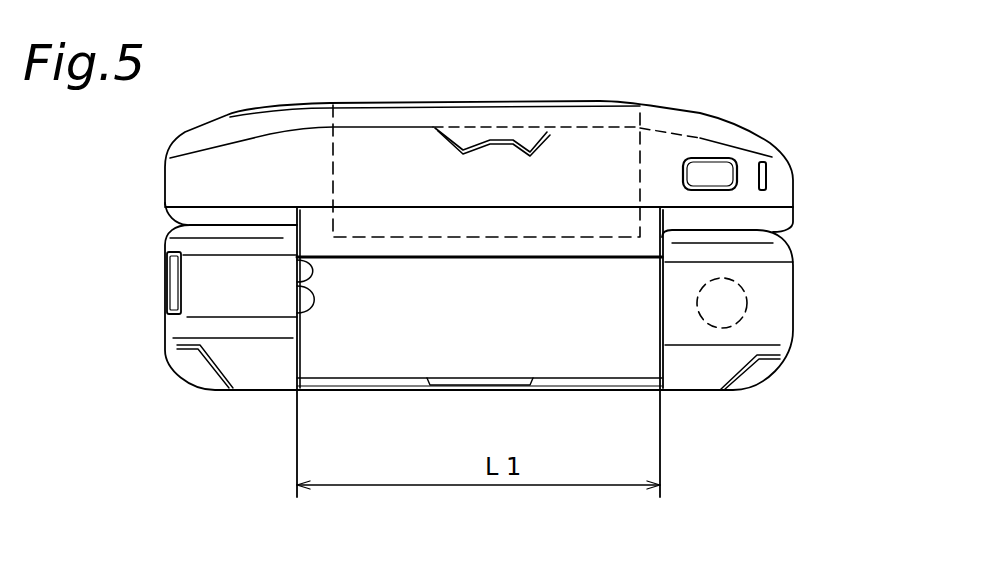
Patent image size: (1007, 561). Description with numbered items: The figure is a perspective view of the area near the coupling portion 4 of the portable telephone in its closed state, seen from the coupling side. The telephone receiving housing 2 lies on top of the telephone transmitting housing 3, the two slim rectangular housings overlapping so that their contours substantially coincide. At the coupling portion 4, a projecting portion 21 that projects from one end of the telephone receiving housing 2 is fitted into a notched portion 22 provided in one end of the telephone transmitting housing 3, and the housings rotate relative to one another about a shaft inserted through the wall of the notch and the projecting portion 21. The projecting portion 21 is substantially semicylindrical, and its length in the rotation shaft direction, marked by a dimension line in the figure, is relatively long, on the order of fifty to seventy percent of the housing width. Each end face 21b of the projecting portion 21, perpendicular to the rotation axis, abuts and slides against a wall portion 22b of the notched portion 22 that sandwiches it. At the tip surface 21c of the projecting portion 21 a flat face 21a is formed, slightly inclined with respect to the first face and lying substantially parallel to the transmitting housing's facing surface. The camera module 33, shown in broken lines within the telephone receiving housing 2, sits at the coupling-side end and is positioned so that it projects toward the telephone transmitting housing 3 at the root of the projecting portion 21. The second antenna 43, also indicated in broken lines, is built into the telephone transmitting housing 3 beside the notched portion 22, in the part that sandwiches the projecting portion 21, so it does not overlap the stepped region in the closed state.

The telephone receiving housing 2 is at (763, 151).
The telephone transmitting housing 3 is at (777, 315).
The coupling portion 4 is at (788, 374).
The camera module 33 is at (598, 158).
The second antenna 43 is at (746, 287).
The projecting portion 21 is at (333, 353).
The flat face 21a is at (340, 357).
The end face 21b is at (322, 343).
The tip surface 21c is at (620, 390).
The notched portion 22 is at (187, 317).
The wall portion 22b is at (297, 263).